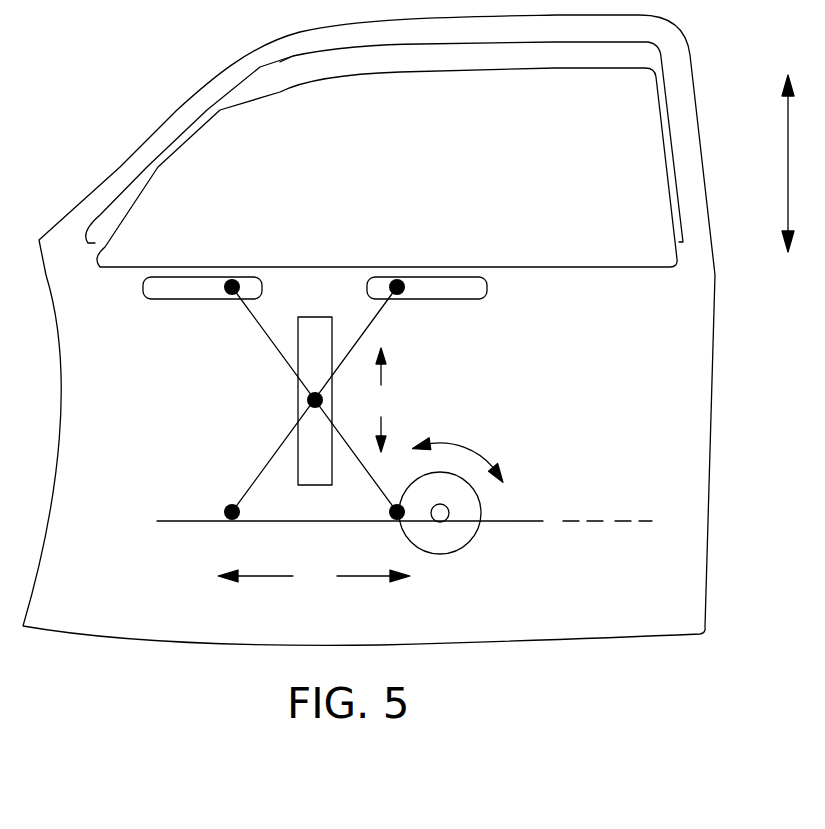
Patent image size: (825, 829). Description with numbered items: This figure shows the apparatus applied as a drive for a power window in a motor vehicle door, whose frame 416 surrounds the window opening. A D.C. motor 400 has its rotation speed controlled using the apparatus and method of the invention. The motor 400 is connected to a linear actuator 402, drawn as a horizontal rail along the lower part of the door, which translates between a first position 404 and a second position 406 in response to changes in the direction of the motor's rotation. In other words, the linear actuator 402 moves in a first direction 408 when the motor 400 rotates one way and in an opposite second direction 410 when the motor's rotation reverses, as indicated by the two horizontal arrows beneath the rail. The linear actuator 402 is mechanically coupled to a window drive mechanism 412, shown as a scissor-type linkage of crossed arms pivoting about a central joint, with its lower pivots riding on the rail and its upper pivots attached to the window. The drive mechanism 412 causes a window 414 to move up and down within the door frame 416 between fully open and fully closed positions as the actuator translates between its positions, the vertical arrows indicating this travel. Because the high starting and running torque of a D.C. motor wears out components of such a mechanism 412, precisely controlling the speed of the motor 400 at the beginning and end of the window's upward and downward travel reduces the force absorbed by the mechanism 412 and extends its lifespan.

The D.C. motor 400 is at (439, 554).
The linear actuator 402 is at (185, 522).
The first position 404 is at (553, 522).
The second position 406 is at (620, 522).
The first direction 408 is at (372, 577).
The second direction 410 is at (255, 577).
The window drive mechanism 412 is at (307, 400).
The window 414 is at (446, 198).
The door frame 416 is at (183, 135).